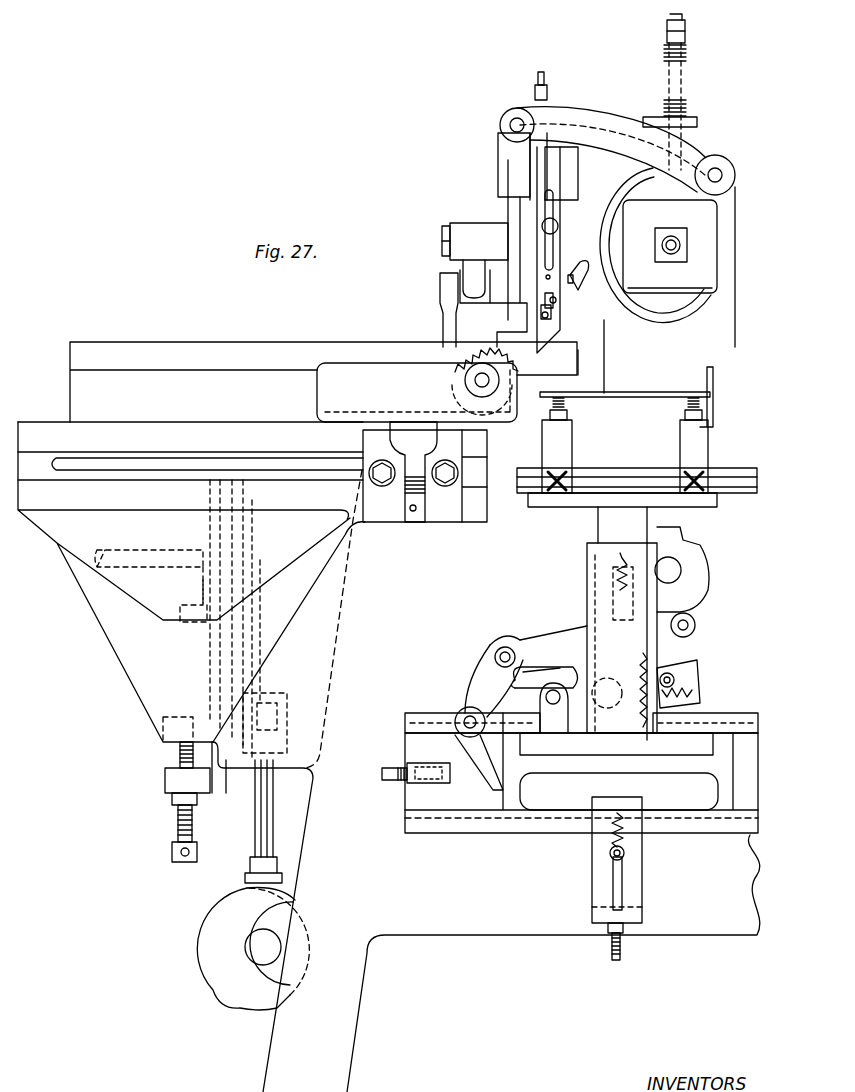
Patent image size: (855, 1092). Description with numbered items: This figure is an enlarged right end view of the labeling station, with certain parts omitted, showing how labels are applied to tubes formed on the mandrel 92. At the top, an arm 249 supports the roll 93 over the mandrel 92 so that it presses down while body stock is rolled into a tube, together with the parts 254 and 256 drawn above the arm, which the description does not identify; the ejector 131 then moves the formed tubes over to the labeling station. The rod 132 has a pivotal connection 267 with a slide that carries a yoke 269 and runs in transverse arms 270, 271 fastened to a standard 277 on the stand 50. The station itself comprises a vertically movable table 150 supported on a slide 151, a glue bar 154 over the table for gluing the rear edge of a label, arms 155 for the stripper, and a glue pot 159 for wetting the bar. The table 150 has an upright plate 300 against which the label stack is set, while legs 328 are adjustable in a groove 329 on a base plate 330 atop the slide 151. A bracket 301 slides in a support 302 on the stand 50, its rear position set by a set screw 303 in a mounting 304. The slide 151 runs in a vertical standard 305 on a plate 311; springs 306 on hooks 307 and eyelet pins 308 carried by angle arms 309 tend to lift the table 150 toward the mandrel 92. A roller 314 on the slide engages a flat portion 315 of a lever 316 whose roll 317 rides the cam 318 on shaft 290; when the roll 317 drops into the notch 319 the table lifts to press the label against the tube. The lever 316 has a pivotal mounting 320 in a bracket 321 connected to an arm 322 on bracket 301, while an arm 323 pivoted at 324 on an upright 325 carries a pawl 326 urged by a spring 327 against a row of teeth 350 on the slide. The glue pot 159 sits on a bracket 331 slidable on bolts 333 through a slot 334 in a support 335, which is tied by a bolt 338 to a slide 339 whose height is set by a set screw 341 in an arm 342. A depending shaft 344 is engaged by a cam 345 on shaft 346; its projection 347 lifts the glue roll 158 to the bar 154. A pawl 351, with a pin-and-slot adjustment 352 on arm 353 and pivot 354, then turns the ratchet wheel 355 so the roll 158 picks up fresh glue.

The stand 50 is at (174, 342).
The mandrel 92 is at (670, 246).
The roll 93 is at (735, 167).
The ejector 131 is at (690, 313).
The rod 132 is at (440, 322).
The table 150 is at (625, 398).
The slide 151 is at (598, 518).
The glue bar 154 is at (556, 300).
The arm 155 is at (590, 272).
The glue roll 158 is at (460, 398).
The glue pot 159 is at (417, 392).
The arm 249 is at (600, 110).
The bolt 254 is at (688, 38).
The screw 256 is at (547, 84).
The pivotal connection 267 is at (462, 224).
The yoke 269 is at (602, 193).
The transverse arm 270 is at (498, 163).
The transverse arm 271 is at (510, 321).
The standard 277 is at (614, 356).
The shaft 290 is at (682, 570).
The upright plate 300 is at (713, 380).
The bracket 301 is at (727, 792).
The support 302 is at (432, 717).
The set screw 303 is at (389, 783).
The mounting 304 is at (430, 767).
The vertical standard 305 is at (590, 577).
The spring 306 is at (627, 838).
The hook 307 is at (617, 557).
The eyelet pin 308 is at (620, 884).
The angle arm 309 is at (637, 914).
The plate 311 is at (678, 755).
The roller 314 is at (612, 704).
The flat portion 315 is at (545, 678).
The lever 316 is at (560, 633).
The roll 317 is at (695, 628).
The cam 318 is at (698, 590).
The notch 319 is at (683, 552).
The pivotal mounting 320 is at (505, 647).
The bracket 321 is at (478, 667).
The arm 322 is at (479, 762).
The arm 323 is at (695, 672).
The pivot 324 is at (547, 700).
The upright 325 is at (547, 742).
The pawl 326 is at (667, 673).
The spring 327 is at (703, 700).
The leg 328 is at (570, 455).
The groove 329 is at (636, 482).
The base plate 330 is at (717, 503).
The bracket 331 is at (487, 440).
The bolt 333 is at (382, 486).
The slot 334 is at (298, 467).
The support 335 is at (215, 423).
The bolt 338 is at (180, 622).
The slide 339 is at (260, 590).
The set screw 341 is at (178, 828).
The arm 342 is at (165, 775).
The depending shaft 344 is at (268, 822).
The cam 345 is at (207, 957).
The shaft 346 is at (253, 957).
The cam projection 347 is at (232, 1010).
The teeth 350 is at (632, 683).
The pawl 351 is at (556, 333).
The pin-and-slot adjustment 352 is at (558, 226).
The arm 353 is at (558, 252).
The pivot 354 is at (550, 316).
The ratchet wheel 355 is at (454, 380).